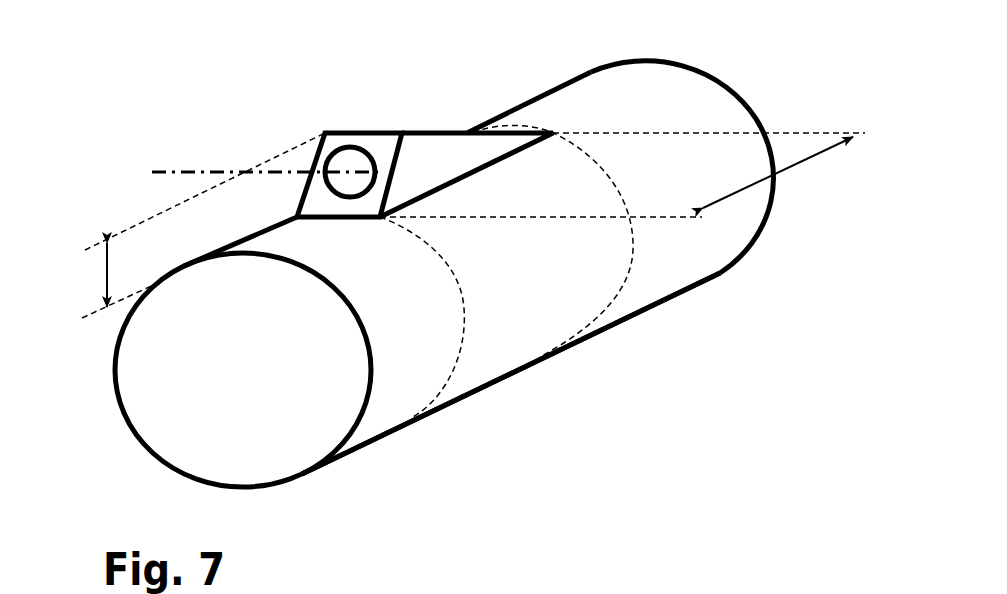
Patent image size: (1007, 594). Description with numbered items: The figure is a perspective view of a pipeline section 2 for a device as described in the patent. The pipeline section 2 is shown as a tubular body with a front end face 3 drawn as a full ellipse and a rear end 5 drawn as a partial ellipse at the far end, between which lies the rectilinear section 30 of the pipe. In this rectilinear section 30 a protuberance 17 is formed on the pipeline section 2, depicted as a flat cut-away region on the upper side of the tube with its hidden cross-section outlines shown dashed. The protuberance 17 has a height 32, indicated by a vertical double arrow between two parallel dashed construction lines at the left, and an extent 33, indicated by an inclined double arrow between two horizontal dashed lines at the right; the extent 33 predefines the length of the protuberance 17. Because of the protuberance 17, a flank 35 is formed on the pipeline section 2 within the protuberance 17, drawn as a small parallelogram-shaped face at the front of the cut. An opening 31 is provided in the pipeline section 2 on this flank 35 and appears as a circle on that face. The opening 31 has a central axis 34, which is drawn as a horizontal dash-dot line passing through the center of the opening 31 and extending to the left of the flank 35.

The pipeline section 2 is at (612, 396).
The front end face 3 is at (187, 340).
The rear end 5 is at (763, 102).
The protuberance 17 is at (430, 157).
The rectilinear section 30 is at (500, 347).
The opening 31 is at (355, 148).
The height 32 is at (103, 280).
The extent 33 is at (807, 163).
The central axis 34 is at (190, 168).
The flank 35 is at (383, 147).